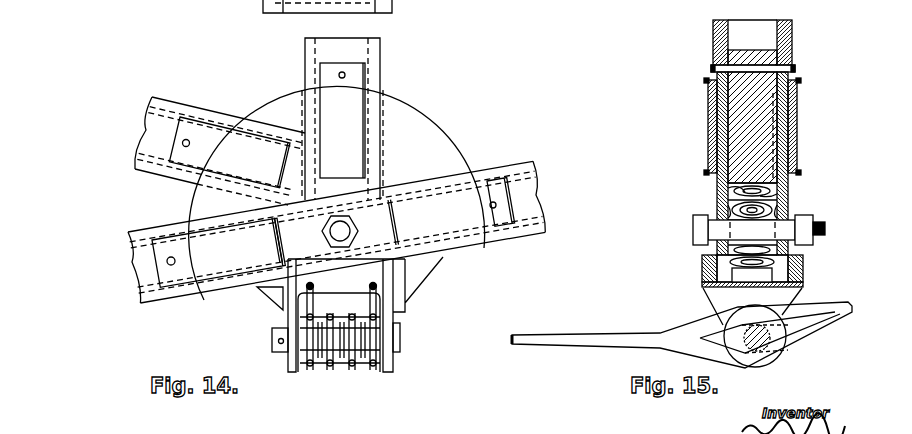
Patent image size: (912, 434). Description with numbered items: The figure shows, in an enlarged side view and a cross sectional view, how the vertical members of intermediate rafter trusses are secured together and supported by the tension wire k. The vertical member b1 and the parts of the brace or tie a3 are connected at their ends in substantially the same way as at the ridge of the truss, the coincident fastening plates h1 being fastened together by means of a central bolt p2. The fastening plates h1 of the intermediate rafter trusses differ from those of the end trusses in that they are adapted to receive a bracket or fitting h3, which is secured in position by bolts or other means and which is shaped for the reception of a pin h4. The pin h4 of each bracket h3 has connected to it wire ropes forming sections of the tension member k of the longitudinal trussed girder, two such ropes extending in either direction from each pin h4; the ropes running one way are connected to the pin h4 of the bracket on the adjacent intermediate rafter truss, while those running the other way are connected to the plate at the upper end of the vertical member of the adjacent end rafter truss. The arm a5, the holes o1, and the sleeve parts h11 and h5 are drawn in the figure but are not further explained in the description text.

In FIG. 14, the fastening plate h1 is at (410, 100).
In FIG. 15, the fastening plate h1 is at (797, 138).
In FIG. 14, the vertical member b1 is at (380, 48).
In FIG. 14, the upper left arm a5 is at (180, 104).
In FIG. 14, the brace or tie a3 is at (517, 160).
In FIG. 14, the holes o1 is at (345, 75).
In FIG. 14, the central bolt p2 is at (350, 232).
In FIG. 15, the central bolt p2 is at (693, 224).
In FIG. 14, the bracket or fitting h3 is at (398, 316).
In FIG. 15, the bracket or fitting h3 is at (700, 265).
In FIG. 14, the pin h4 is at (272, 334).
In FIG. 15, the pin h4 is at (758, 352).
In FIG. 14, the tension member k is at (309, 368).
In FIG. 15, the tension member k is at (565, 343).
In FIG. 15, the tube body h11 is at (797, 88).
In FIG. 15, the left sleeve h5 is at (708, 137).